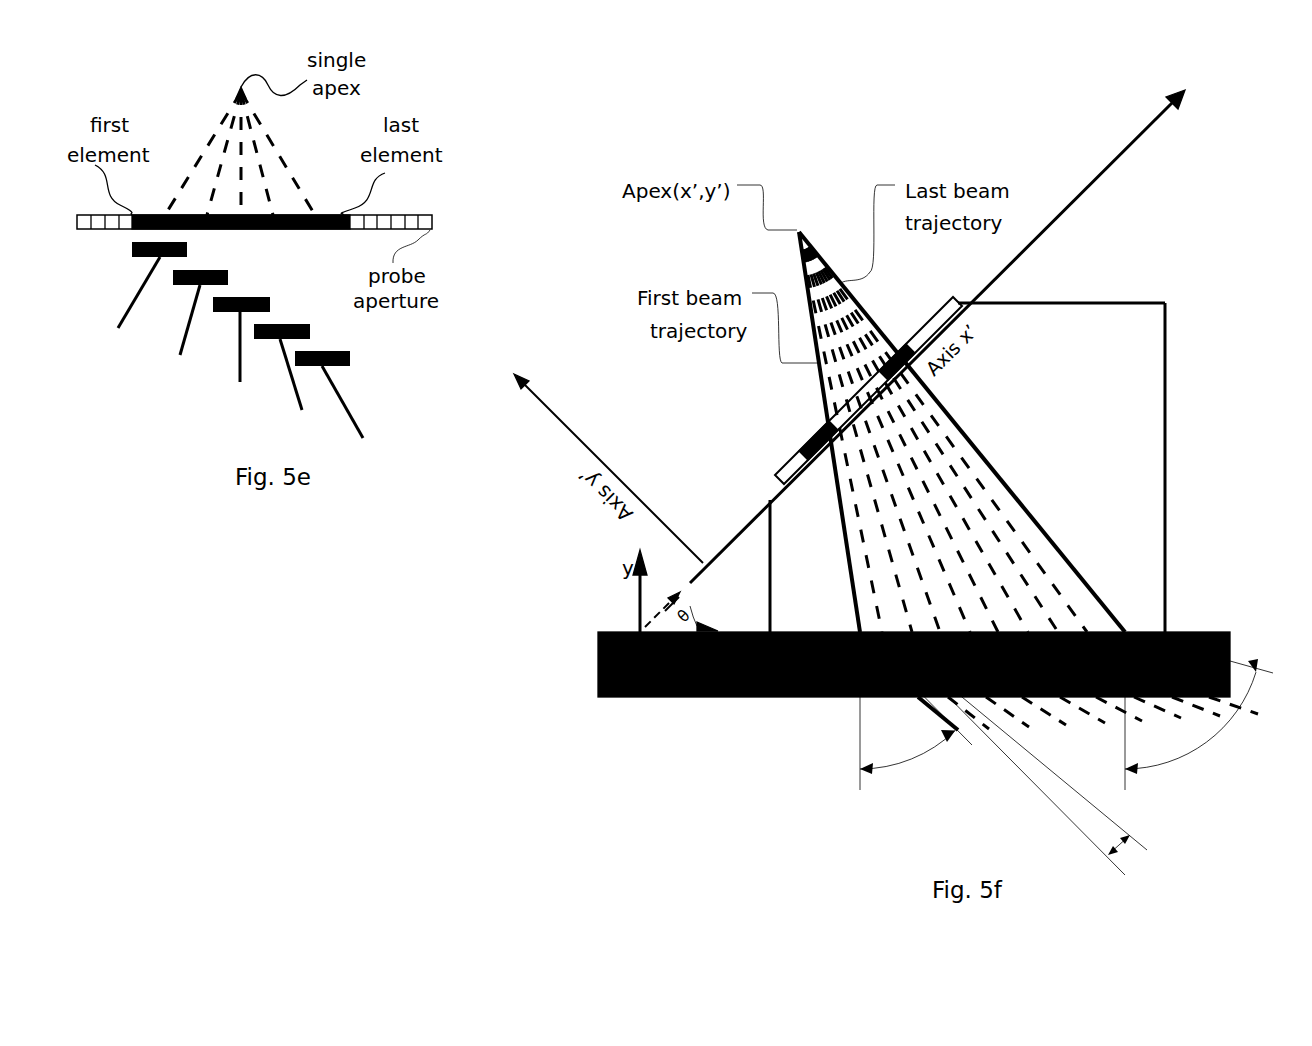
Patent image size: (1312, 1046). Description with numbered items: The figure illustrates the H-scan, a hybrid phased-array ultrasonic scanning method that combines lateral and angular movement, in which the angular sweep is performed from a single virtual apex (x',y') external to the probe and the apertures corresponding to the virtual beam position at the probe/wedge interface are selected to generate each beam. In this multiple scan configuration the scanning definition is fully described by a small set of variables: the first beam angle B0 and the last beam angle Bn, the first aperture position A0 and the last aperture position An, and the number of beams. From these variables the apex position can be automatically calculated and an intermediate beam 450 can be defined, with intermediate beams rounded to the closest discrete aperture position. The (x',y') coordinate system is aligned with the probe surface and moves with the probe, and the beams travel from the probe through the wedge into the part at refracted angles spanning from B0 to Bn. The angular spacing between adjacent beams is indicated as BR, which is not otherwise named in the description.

The intermediate beam 450 is at (903, 527).
The first aperture position A0 is at (810, 433).
The last aperture position An is at (893, 350).
The first beam angle B0 is at (916, 712).
The last beam angle Bn is at (1199, 711).
The beam angular resolution BR is at (1019, 757).